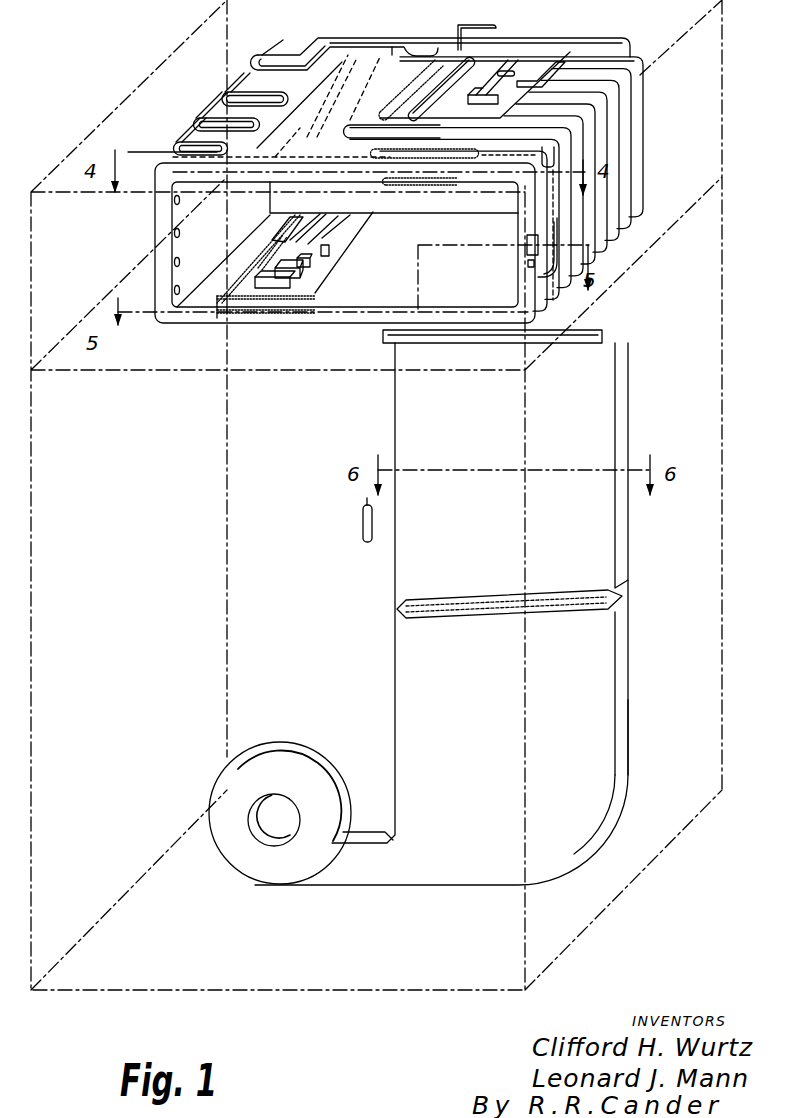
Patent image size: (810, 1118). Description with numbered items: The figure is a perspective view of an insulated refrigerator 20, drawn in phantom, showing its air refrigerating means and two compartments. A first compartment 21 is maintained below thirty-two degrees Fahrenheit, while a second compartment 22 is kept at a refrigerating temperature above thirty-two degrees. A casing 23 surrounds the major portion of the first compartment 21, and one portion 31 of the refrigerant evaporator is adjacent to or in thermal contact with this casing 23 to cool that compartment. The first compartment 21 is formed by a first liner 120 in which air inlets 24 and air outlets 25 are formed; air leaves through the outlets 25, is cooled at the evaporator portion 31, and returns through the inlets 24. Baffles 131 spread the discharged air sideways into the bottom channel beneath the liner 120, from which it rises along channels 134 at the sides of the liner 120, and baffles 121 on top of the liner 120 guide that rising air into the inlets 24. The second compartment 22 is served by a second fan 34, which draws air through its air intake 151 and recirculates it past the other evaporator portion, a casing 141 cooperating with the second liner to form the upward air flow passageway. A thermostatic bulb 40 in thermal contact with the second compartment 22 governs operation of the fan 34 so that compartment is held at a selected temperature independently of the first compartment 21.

The insulated refrigerator 20 is at (113, 108).
The first compartment 21 is at (686, 131).
The second compartment 22 is at (321, 608).
The casing 23 is at (284, 63).
The air inlets 24 is at (513, 70).
The air outlets 25 is at (181, 233).
The evaporator portion 31 is at (208, 116).
The second fan 34 is at (306, 776).
The thermostatic bulb 40 is at (362, 525).
The first liner 120 is at (515, 84).
The baffles 121 is at (493, 95).
The baffles 131 is at (280, 288).
The channels 134 is at (527, 243).
The casing 141 is at (600, 773).
The air intake 151 is at (281, 823).